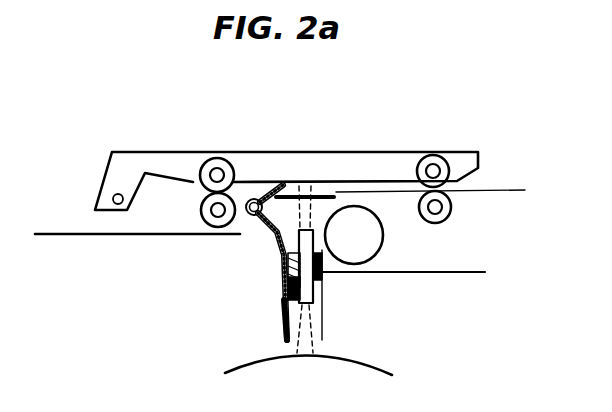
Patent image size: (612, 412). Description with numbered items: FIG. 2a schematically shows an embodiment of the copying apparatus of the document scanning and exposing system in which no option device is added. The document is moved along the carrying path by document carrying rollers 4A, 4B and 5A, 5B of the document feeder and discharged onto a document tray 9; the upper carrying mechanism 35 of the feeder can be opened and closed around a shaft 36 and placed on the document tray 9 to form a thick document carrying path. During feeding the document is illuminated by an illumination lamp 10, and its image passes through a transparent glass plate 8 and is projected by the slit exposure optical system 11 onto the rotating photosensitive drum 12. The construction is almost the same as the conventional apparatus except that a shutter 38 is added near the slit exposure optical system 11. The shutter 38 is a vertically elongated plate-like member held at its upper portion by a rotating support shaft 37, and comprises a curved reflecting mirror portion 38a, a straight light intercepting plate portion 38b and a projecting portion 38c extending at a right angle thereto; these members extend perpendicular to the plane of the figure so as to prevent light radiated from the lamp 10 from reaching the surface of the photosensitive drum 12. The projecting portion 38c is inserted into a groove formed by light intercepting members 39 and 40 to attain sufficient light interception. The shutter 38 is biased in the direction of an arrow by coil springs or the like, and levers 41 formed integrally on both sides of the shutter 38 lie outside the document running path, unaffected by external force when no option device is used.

The upper carrying mechanism 35 is at (134, 158).
The shaft 36 is at (121, 203).
The document carrying roller 5B is at (217, 158).
The document carrying roller 5A is at (198, 227).
The document carrying roller 4B is at (437, 155).
The document carrying roller 4A is at (449, 217).
The document tray 9 is at (67, 237).
The transparent glass plate 8 is at (293, 190).
The lever 41 is at (273, 184).
The rotating support shaft 37 is at (248, 216).
The shutter 38 is at (282, 328).
The curved reflecting mirror portion 38a is at (277, 272).
The straight light intercepting plate portion 38b is at (287, 292).
The projecting portion 38c is at (270, 237).
The light intercepting member 39 is at (318, 278).
The slit exposure optical system 11 is at (313, 300).
The light intercepting member 40 is at (296, 354).
The illumination lamp 10 is at (383, 243).
The photosensitive drum 12 is at (385, 348).